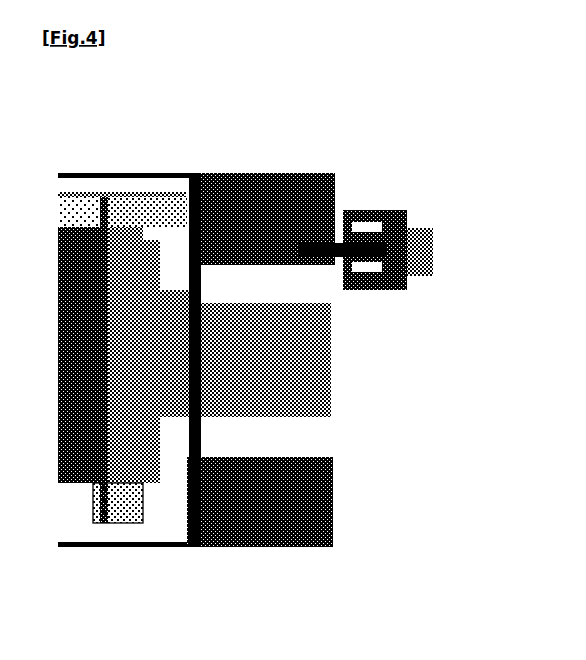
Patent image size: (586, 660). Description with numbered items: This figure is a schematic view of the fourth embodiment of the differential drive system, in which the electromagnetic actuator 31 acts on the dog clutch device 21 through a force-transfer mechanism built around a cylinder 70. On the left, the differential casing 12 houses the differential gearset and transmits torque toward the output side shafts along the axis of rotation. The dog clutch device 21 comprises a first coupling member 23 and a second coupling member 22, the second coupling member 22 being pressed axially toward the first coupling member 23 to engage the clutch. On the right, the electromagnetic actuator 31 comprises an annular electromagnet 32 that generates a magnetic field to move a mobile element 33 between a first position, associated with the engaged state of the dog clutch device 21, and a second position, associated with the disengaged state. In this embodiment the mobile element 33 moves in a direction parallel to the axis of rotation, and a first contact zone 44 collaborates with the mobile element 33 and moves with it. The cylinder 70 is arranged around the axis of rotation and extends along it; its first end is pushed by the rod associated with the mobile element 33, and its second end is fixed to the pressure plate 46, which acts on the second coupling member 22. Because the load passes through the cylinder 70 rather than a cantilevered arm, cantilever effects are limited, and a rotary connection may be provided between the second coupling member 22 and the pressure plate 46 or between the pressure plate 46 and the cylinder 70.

The differential casing 12 is at (143, 187).
The dog clutch device 21 is at (192, 207).
The second coupling member 22 is at (132, 210).
The first coupling member 23 is at (87, 213).
The electromagnetic actuator 31 is at (412, 246).
The annular electromagnet 32 is at (385, 290).
The mobile element 33 is at (430, 257).
The first contact zone 44 is at (387, 245).
The pressure plate 46 is at (203, 430).
The cylinder 70 is at (331, 175).